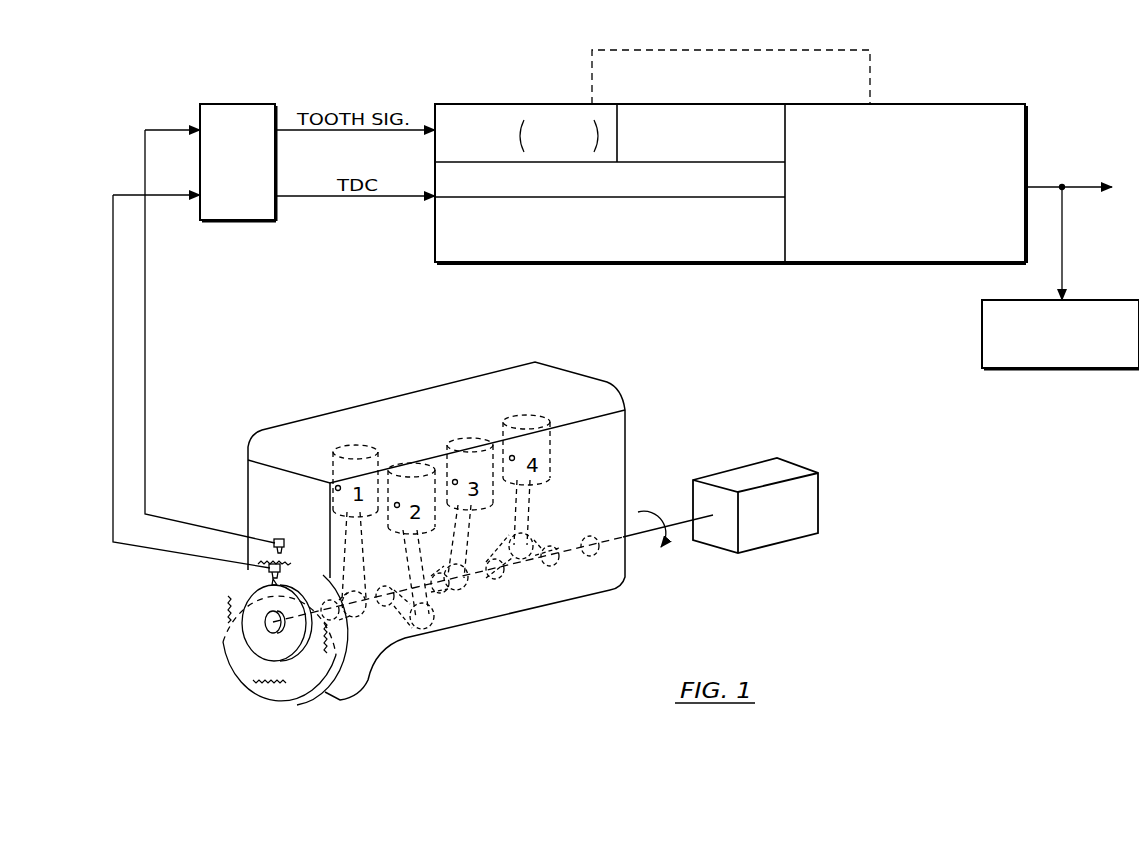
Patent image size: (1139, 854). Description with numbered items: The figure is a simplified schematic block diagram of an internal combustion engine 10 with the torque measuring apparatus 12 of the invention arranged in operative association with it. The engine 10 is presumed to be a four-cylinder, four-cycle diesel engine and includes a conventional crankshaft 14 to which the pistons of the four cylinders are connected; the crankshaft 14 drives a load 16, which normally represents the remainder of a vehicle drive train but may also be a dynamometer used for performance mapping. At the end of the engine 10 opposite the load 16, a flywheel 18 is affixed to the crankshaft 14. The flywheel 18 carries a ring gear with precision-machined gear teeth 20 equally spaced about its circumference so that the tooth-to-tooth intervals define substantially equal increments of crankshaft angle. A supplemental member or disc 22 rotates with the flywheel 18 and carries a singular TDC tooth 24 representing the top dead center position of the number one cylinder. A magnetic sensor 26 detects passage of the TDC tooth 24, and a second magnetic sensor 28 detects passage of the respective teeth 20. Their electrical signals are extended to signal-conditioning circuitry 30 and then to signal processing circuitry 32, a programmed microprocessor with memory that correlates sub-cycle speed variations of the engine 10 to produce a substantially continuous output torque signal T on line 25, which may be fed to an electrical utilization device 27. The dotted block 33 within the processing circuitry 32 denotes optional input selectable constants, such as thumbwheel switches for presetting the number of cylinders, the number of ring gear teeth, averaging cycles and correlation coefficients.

The internal combustion engine 10 is at (510, 605).
The torque measuring apparatus 12 is at (92, 147).
The crankshaft 14 is at (433, 607).
The load 16 is at (787, 468).
The flywheel 18 is at (235, 640).
The gear teeth 20 is at (224, 604).
The supplemental member or disc 22 is at (283, 656).
The TDC tooth 24 is at (271, 582).
The line 25 is at (1072, 187).
The sensor 26 is at (267, 565).
The electrical utilization device 27 is at (1080, 300).
The sensor 28 is at (278, 539).
The signal-conditioning circuitry 30 is at (243, 104).
The signal processing circuitry 32 is at (470, 104).
The input selectable constants block 33 is at (570, 70).